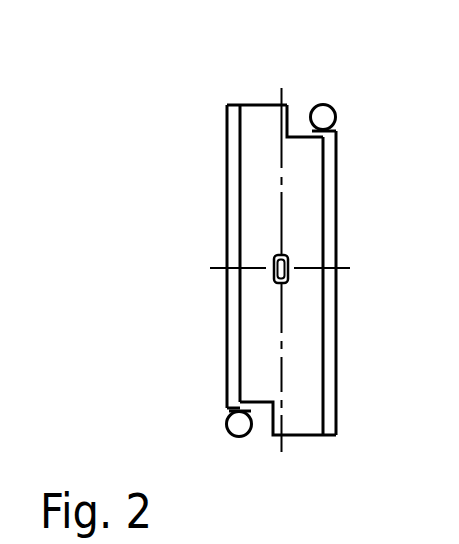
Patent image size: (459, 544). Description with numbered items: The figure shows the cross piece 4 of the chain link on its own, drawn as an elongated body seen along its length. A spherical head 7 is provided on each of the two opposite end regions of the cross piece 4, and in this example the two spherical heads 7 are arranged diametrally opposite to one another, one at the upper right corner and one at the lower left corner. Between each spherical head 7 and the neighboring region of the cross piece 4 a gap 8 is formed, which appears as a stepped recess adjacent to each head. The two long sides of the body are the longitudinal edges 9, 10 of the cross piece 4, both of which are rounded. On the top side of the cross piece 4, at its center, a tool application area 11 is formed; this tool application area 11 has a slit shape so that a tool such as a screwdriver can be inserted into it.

The cross piece 4 is at (305, 350).
The spherical head 7 is at (331, 103).
The gap 8 is at (301, 123).
The longitudinal edge 9 is at (235, 201).
The longitudinal edge 10 is at (336, 212).
The tool application area 11 is at (274, 275).